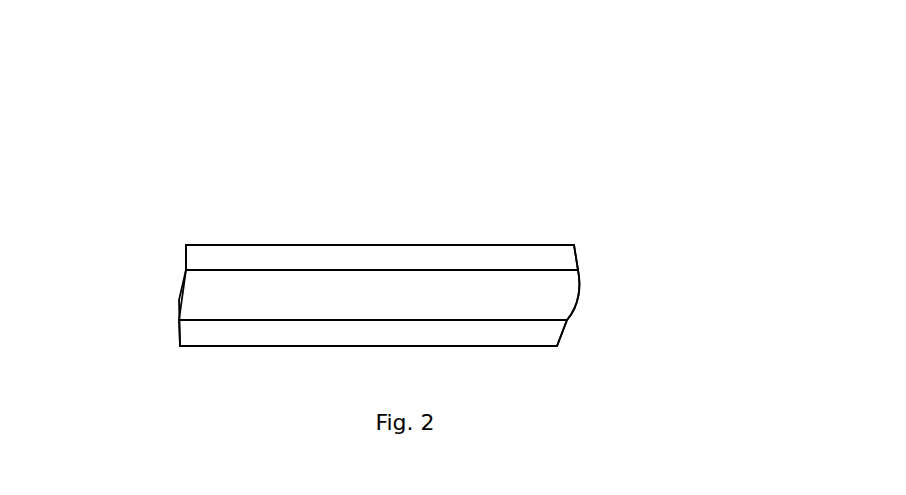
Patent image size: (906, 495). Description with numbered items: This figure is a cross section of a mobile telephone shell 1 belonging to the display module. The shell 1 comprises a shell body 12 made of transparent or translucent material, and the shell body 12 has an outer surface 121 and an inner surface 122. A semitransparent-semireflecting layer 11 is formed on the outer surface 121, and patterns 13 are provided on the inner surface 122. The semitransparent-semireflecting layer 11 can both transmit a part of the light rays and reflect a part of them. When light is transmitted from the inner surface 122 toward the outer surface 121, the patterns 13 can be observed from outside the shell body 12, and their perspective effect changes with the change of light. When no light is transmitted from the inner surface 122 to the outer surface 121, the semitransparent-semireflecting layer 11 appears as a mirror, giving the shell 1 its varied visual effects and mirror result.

The shell 1 is at (203, 175).
The semitransparent-semireflecting layer 11 is at (537, 255).
The shell body 12 is at (539, 296).
The outer surface 121 is at (260, 270).
The inner surface 122 is at (287, 320).
The patterns 13 is at (537, 333).